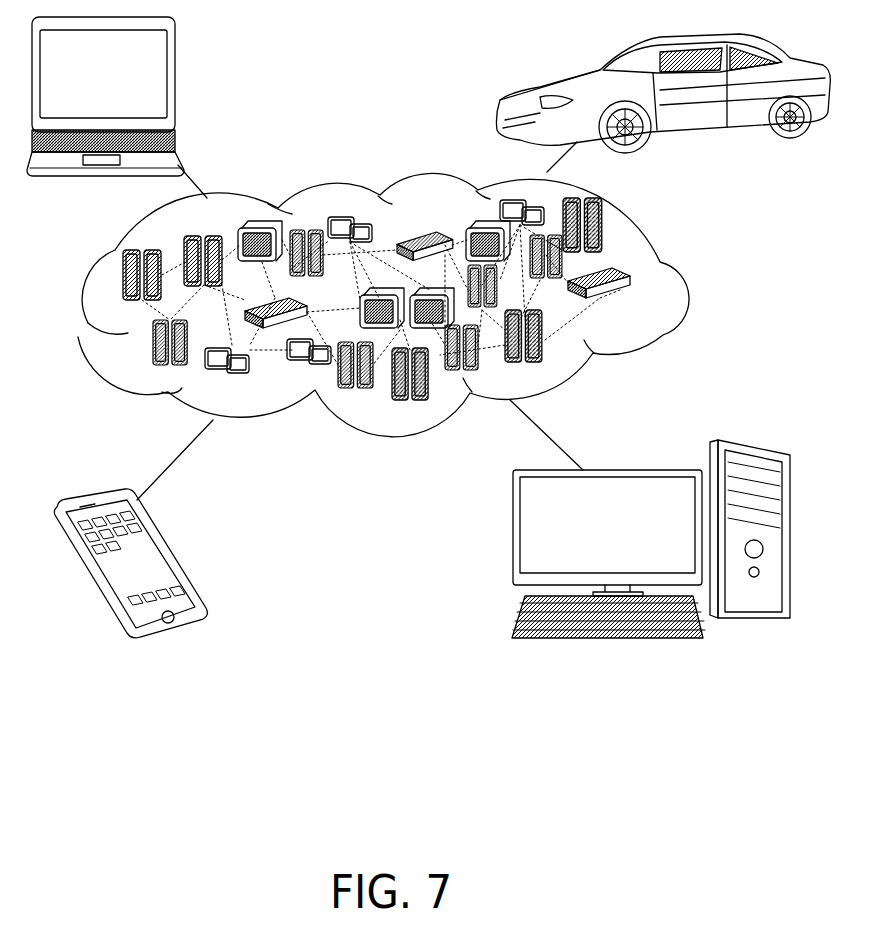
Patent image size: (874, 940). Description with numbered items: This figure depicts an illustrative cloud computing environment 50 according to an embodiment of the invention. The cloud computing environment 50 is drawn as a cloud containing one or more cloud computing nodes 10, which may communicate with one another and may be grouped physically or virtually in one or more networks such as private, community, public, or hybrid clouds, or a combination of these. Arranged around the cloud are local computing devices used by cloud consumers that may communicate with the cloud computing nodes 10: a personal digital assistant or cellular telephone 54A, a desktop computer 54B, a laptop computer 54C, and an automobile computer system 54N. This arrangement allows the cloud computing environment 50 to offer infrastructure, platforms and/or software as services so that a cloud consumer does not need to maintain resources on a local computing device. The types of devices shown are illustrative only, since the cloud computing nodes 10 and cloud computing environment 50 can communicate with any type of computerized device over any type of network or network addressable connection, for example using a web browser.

The cloud computing node 10 is at (640, 300).
The cloud computing environment 50 is at (403, 304).
The personal digital assistant or cellular telephone 54A is at (150, 555).
The desktop computer 54B is at (660, 470).
The laptop computer 54C is at (155, 92).
The automobile computer system 54N is at (500, 100).